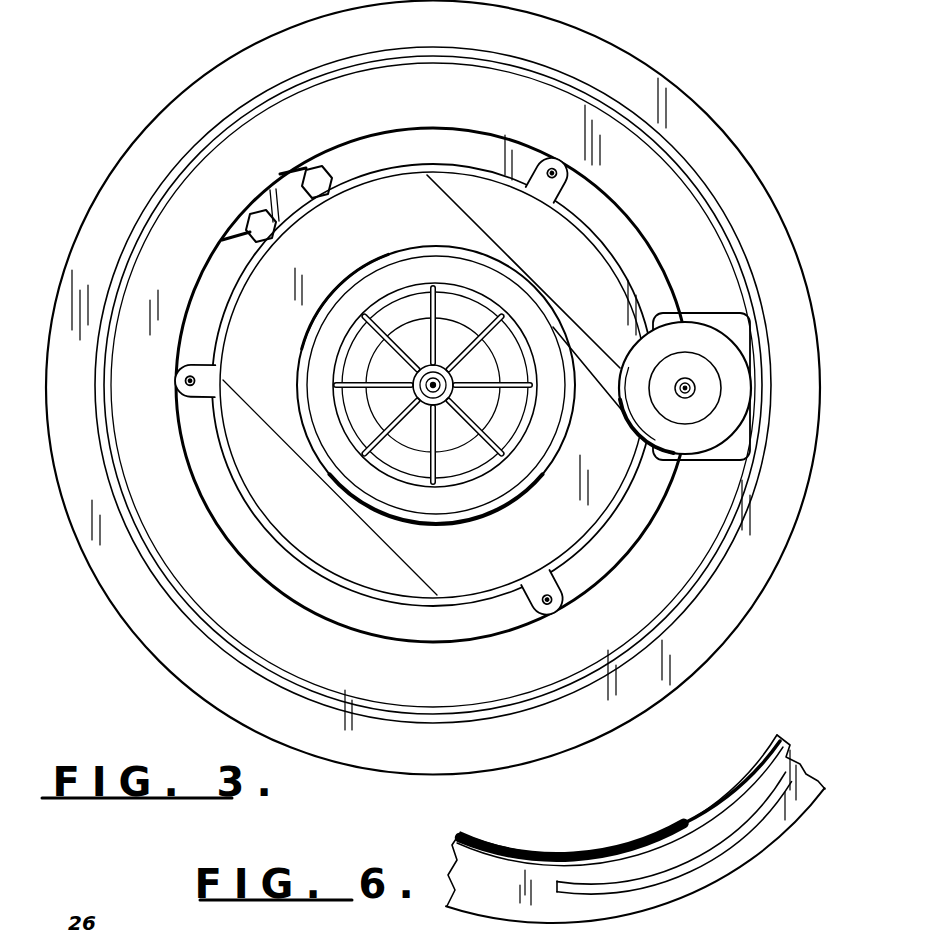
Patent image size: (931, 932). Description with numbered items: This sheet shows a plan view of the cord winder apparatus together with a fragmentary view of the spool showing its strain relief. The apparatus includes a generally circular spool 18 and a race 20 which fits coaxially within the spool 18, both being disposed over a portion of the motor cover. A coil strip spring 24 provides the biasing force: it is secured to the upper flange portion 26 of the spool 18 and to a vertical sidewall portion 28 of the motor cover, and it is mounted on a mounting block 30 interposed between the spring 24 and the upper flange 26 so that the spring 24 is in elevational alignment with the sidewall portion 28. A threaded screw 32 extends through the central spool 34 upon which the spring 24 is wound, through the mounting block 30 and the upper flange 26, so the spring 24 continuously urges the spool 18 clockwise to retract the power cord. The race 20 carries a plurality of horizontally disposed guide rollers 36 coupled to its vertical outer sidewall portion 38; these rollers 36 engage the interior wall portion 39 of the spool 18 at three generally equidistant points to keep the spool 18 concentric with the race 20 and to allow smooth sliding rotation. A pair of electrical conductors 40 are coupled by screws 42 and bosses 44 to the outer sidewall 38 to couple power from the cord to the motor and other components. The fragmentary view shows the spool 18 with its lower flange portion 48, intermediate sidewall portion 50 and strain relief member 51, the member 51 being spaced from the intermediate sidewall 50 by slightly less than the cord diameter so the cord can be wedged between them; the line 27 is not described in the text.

In FIG. 3, the spool 18 is at (195, 227).
In FIG. 6, the spool 18 is at (798, 733).
In FIG. 3, the race 20 is at (397, 166).
In FIG. 3, the coil strip spring 24 is at (300, 370).
In FIG. 3, the upper flange portion 26 is at (690, 572).
In FIG. 3, the mounting plate edge 27 is at (460, 577).
In FIG. 3, the vertical sidewall portion 28 is at (395, 258).
In FIG. 3, the mounting block 30 is at (740, 330).
In FIG. 3, the threaded screw 32 is at (688, 400).
In FIG. 3, the central spool 34 is at (705, 400).
In FIG. 3, the guide rollers 36 is at (575, 182).
In FIG. 3, the vertical outer sidewall portion 38 is at (618, 258).
In FIG. 3, the interior wall portion 39 is at (487, 135).
In FIG. 3, the electrical conductors 40 is at (267, 208).
In FIG. 3, the screws 42 is at (253, 222).
In FIG. 3, the bosses 44 is at (272, 228).
In FIG. 6, the lower flange portion 48 is at (697, 882).
In FIG. 6, the intermediate sidewall portion 50 is at (620, 852).
In FIG. 6, the strain relief member 51 is at (720, 837).